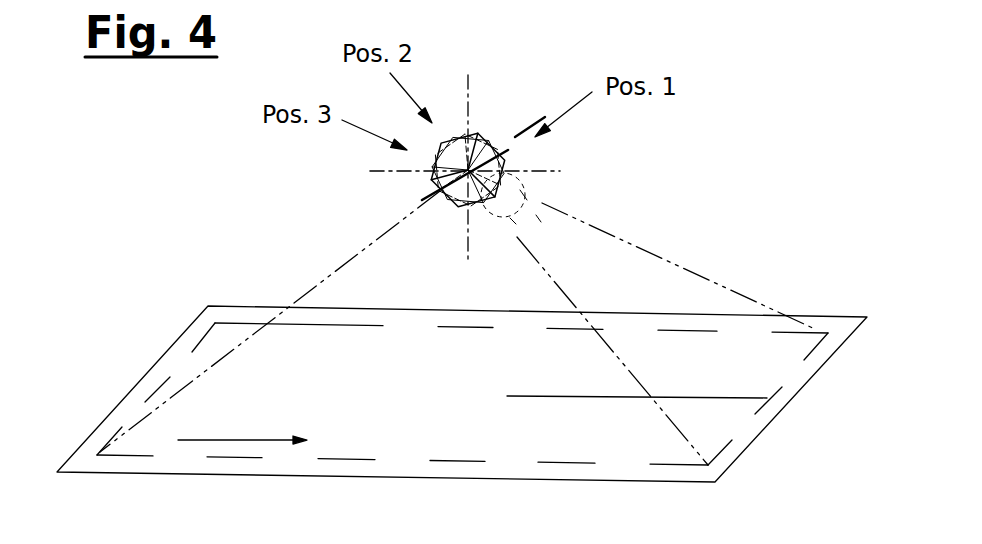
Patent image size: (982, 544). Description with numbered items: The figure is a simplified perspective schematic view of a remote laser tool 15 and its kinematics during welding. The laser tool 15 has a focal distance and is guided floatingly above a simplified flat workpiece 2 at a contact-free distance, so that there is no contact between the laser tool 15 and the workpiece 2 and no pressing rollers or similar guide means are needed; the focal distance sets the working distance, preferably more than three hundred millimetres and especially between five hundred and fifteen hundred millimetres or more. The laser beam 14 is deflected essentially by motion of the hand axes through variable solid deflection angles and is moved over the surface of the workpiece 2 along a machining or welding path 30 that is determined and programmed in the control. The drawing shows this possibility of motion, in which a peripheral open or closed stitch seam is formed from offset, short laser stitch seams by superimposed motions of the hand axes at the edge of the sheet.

The workpiece 2 is at (178, 338).
The laser beam 14 is at (240, 345).
The laser tool 15 is at (483, 140).
The machining path 30 is at (453, 328).